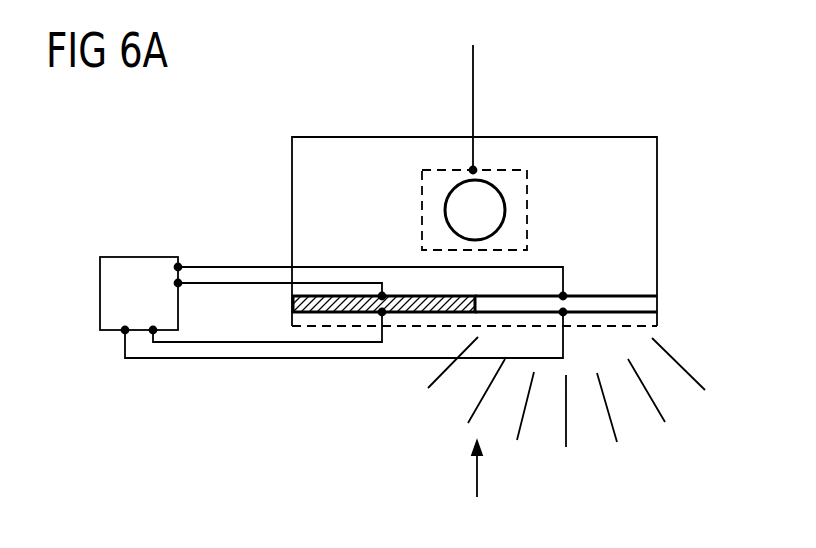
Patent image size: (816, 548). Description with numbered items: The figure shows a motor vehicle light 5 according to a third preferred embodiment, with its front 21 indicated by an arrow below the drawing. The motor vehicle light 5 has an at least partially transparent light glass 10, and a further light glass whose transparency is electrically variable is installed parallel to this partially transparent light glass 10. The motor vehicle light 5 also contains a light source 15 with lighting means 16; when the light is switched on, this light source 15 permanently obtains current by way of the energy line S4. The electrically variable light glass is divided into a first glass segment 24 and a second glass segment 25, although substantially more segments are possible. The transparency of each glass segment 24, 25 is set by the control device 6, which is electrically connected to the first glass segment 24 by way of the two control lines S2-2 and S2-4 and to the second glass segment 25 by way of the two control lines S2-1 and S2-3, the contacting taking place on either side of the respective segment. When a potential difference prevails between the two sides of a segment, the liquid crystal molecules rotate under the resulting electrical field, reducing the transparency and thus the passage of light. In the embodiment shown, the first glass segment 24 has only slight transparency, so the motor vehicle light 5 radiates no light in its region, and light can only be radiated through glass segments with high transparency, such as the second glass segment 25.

The motor vehicle light 5 is at (652, 107).
The light source 15 is at (527, 194).
The lighting means 16 is at (445, 208).
The energy line S4 is at (473, 90).
The control device 6 is at (100, 297).
The control line S2-1 is at (192, 267).
The control line S2-2 is at (267, 283).
The control line S2-3 is at (190, 358).
The control line S2-4 is at (273, 342).
The first glass segment 24 is at (293, 305).
The second glass segment 25 is at (648, 302).
The partially transparent light glass 10 is at (417, 326).
The front 21 is at (566, 438).